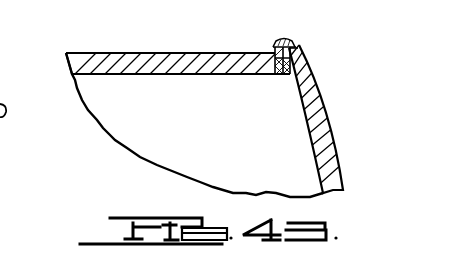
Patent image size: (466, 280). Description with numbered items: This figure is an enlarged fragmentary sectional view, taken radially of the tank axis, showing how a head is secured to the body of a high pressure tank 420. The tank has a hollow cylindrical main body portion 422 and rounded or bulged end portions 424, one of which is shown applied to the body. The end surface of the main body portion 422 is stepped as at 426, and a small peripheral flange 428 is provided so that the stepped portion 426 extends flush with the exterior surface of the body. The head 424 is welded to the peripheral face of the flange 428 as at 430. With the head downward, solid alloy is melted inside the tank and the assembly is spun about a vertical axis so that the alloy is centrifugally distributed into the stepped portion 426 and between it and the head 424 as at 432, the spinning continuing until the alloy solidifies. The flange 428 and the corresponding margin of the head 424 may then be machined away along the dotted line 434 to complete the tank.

The high pressure tank 420 is at (108, 53).
The main body portion 422 is at (174, 37).
The end portion 424 is at (334, 139).
The stepped portion 426 is at (270, 75).
The peripheral flange 428 is at (273, 50).
The weld 430 is at (284, 40).
The alloy 432 is at (283, 75).
The dotted line 434 is at (299, 47).